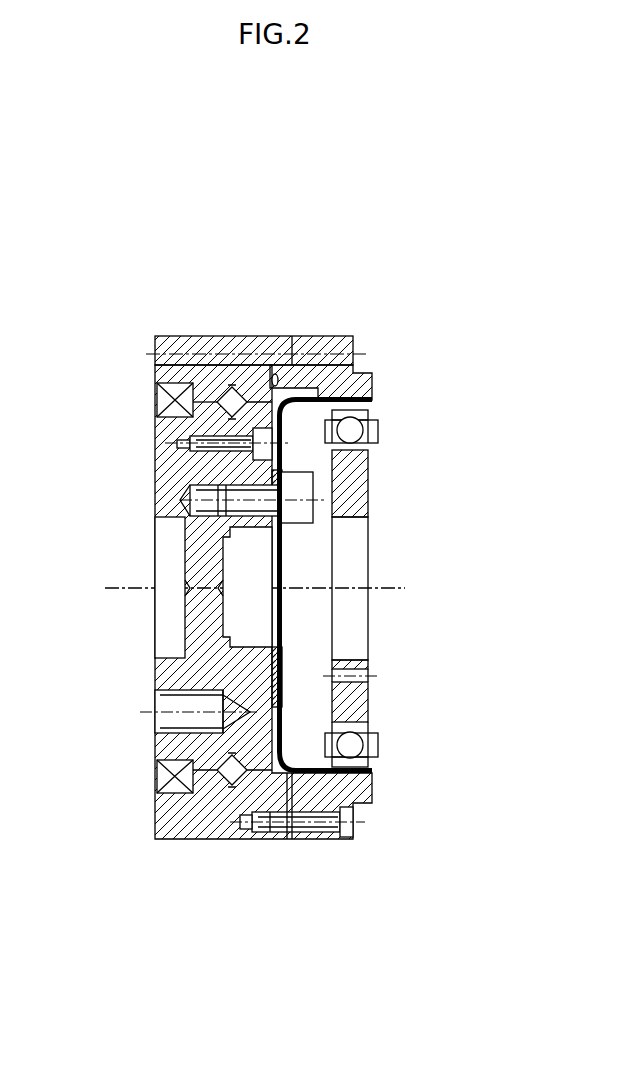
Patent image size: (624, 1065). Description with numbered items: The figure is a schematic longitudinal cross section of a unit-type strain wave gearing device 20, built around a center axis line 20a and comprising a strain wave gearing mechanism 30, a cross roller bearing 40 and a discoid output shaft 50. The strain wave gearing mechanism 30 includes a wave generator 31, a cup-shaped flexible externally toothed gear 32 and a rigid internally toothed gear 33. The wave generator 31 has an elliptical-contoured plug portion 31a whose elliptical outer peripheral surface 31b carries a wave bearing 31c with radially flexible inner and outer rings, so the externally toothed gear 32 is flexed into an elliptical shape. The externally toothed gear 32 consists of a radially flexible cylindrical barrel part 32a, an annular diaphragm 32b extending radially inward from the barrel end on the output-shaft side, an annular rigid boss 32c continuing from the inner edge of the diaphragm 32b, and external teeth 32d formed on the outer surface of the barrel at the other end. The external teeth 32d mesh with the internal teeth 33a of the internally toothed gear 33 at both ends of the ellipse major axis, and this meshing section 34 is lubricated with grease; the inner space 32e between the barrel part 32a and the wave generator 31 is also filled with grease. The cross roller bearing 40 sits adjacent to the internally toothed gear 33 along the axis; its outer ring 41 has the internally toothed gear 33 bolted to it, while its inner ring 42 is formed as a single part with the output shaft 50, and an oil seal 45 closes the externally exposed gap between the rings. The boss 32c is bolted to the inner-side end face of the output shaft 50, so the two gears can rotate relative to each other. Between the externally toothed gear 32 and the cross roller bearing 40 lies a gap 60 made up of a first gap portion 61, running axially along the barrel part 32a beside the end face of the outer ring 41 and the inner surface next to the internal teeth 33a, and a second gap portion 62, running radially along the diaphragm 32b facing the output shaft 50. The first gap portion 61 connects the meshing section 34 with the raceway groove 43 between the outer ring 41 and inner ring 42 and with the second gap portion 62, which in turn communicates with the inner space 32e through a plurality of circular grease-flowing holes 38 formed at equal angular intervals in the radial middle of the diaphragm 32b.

The unit-type strain wave gearing device 20 is at (269, 589).
The center axis line 20a is at (389, 582).
The strain wave gearing mechanism 30 is at (309, 636).
The wave generator 31 is at (409, 602).
The plug portion 31a is at (368, 703).
The elliptical outer peripheral surface 31b is at (366, 738).
The wave bearing 31c is at (373, 758).
The flexible externally toothed gear 32 is at (276, 633).
The cylindrical barrel part 32a is at (310, 805).
The diaphragm 32b is at (283, 790).
The boss 32c is at (272, 672).
The external teeth 32d is at (360, 795).
The inner space 32e is at (314, 598).
The rigid internally toothed gear 33 is at (380, 385).
The internal teeth 33a is at (372, 772).
The meshing section 34 is at (353, 822).
The grease-flowing holes 38 is at (273, 417).
The cross roller bearing 40 is at (189, 390).
The outer ring 41 is at (218, 385).
The inner ring 42 is at (190, 417).
The raceway groove 43 is at (183, 408).
The oil seal 45 is at (157, 770).
The output shaft 50 is at (150, 492).
The gap 60 is at (312, 352).
The first gap portion 61 is at (290, 390).
The second gap portion 62 is at (289, 443).